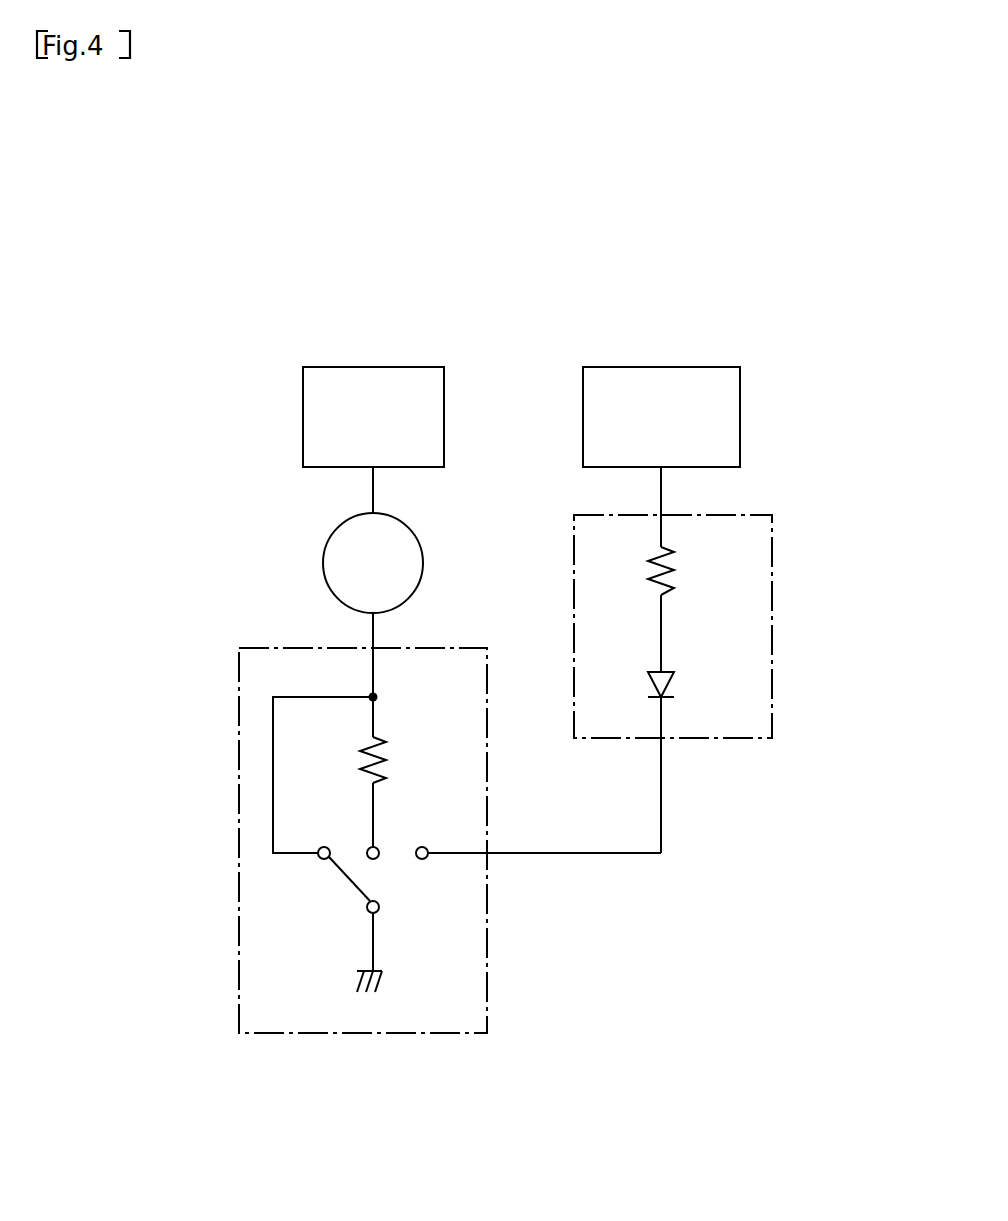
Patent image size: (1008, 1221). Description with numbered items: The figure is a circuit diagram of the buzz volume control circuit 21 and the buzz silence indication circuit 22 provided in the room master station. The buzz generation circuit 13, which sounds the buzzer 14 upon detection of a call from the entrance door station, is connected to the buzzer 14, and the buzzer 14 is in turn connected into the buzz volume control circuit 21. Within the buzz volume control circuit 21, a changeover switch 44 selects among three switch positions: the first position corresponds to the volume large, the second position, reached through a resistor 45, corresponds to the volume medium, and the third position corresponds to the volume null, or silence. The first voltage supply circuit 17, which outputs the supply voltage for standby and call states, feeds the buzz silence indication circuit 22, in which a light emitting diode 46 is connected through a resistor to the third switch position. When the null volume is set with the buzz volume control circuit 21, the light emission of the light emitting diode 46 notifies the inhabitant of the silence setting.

The buzz generation circuit 13 is at (373, 367).
The buzzer 14 is at (324, 563).
The first voltage supply circuit 17 is at (659, 367).
The buzz volume control circuit 21 is at (487, 952).
The buzz silence indication circuit 22 is at (772, 655).
The changeover switch 44 is at (350, 878).
The resistor 45 is at (386, 762).
The light emitting diode 46 is at (672, 683).